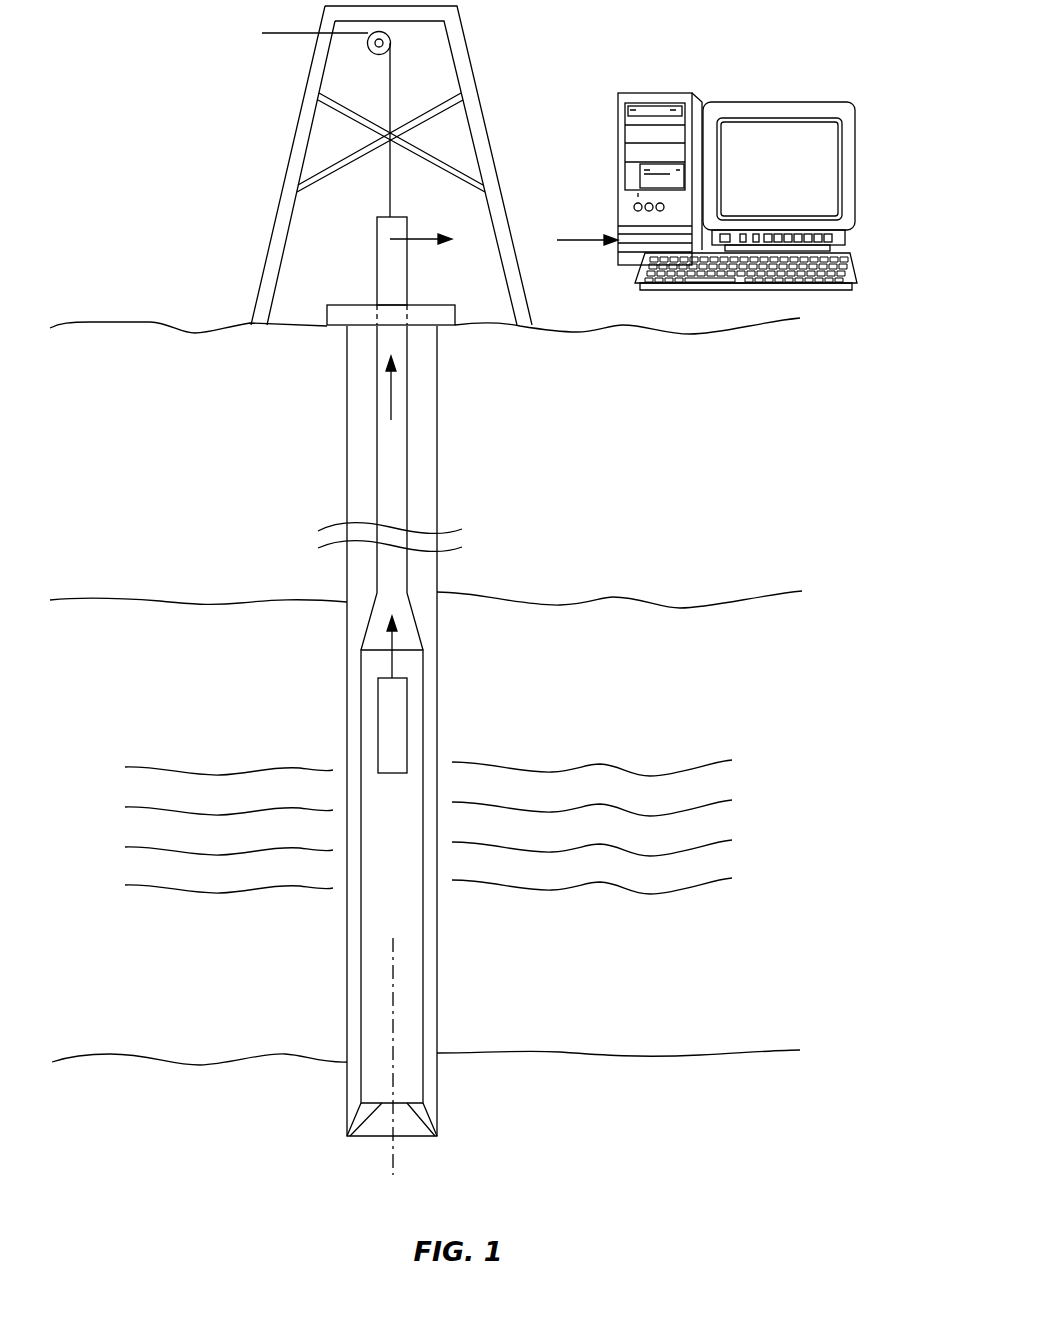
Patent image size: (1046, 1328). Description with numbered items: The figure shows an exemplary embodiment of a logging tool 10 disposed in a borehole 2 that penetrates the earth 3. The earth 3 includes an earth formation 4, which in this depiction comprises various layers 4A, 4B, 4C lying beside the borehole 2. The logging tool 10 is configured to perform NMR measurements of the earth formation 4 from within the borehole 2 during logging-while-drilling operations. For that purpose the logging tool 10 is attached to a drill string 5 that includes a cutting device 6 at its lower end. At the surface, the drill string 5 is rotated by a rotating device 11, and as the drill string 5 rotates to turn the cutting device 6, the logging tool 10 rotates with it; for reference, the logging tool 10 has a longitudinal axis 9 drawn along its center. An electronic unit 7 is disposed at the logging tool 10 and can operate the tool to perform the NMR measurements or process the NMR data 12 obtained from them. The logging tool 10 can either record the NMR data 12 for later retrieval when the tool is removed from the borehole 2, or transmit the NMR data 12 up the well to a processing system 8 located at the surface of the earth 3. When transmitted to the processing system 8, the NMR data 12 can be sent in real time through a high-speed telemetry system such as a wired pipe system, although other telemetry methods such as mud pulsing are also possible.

The borehole 2 is at (347, 412).
The earth 3 is at (139, 471).
The earth formation 4 is at (139, 682).
The layer 4A is at (723, 791).
The layer 4B is at (723, 831).
The layer 4C is at (723, 871).
The drill string 5 is at (392, 495).
The cutting device 6 is at (362, 1120).
The electronic unit 7 is at (392, 740).
The processing system 8 is at (637, 93).
The longitudinal axis 9 is at (393, 1012).
The logging tool 10 is at (378, 902).
The rotating device 11 is at (340, 305).
The NMR data 12 is at (574, 240).